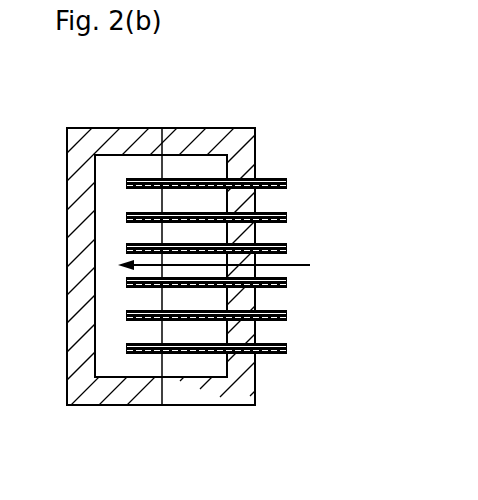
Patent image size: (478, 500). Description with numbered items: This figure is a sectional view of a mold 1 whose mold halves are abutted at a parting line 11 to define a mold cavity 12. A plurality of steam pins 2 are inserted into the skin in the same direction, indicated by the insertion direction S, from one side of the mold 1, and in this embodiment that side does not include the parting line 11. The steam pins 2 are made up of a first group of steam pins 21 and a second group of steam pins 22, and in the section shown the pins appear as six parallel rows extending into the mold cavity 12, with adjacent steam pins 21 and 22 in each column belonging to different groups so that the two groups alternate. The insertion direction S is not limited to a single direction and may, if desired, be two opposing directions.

The mold 1 is at (205, 393).
The parting line 11 is at (165, 130).
The mold cavity 12 is at (105, 363).
The steam pins 2 is at (272, 246).
The first group of steam pins 21 is at (287, 178).
The second group of steam pins 22 is at (287, 212).
The insertion direction S is at (223, 266).